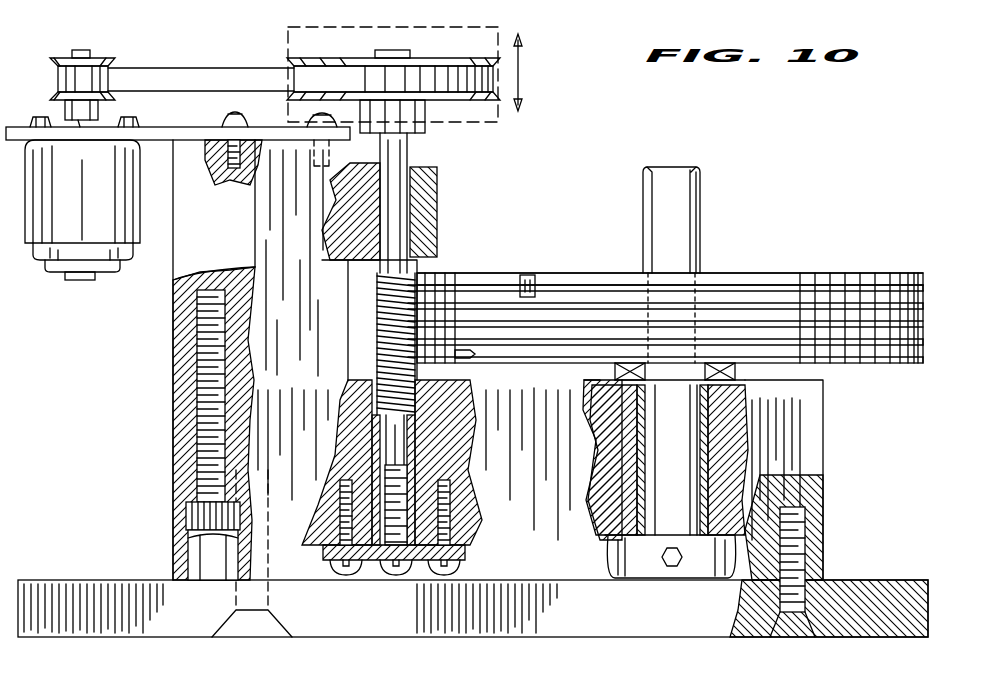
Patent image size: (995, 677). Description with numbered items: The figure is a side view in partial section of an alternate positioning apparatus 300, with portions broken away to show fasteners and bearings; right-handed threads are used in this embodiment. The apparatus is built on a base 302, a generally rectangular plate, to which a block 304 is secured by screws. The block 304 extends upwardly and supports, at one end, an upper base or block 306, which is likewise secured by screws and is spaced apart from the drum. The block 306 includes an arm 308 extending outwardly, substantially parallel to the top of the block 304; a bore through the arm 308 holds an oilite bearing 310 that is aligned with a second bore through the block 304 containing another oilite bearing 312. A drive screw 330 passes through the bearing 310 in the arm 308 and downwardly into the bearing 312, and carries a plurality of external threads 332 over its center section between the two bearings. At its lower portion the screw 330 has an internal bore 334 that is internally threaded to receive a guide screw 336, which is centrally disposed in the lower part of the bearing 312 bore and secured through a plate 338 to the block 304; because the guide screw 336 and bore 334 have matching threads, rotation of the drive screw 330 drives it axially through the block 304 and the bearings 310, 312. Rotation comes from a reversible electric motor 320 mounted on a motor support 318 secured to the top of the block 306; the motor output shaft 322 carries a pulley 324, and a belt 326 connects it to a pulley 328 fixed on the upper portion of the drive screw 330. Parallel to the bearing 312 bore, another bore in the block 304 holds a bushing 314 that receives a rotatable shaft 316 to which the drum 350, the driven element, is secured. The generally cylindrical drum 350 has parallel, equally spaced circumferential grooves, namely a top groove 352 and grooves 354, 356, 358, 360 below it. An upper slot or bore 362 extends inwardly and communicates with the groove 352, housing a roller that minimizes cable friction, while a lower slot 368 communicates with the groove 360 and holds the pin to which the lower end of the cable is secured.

The positioning apparatus 300 is at (566, 142).
The base 302 is at (88, 592).
The block 304 is at (173, 474).
The upper base or block 306 is at (197, 340).
The arm 308 is at (438, 196).
The bearing 310 is at (410, 170).
The bearing 312 is at (405, 428).
The bushing 314 is at (726, 421).
The shaft 316 is at (676, 182).
The motor support 318 is at (160, 134).
The motor 320 is at (52, 266).
The output shaft 322 is at (80, 50).
The pulley 324 is at (105, 60).
The belt 326 is at (216, 77).
The pulley 328 is at (343, 62).
The drive screw 330 is at (380, 150).
The external threads 332 is at (418, 270).
The internal bore 334 is at (396, 478).
The guide screw 336 is at (396, 558).
The plate 338 is at (345, 562).
The drum 350 is at (770, 270).
The top groove 352 is at (500, 276).
The groove 354 is at (926, 285).
The groove 356 is at (925, 303).
The groove 358 is at (926, 340).
The groove 360 is at (924, 357).
The upper slot or bore 362 is at (534, 276).
The lower slot 368 is at (462, 360).